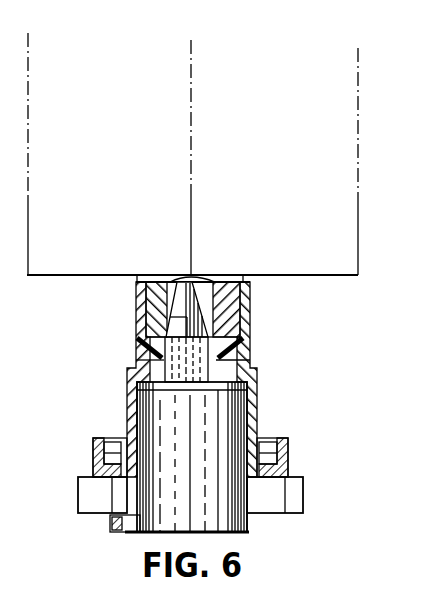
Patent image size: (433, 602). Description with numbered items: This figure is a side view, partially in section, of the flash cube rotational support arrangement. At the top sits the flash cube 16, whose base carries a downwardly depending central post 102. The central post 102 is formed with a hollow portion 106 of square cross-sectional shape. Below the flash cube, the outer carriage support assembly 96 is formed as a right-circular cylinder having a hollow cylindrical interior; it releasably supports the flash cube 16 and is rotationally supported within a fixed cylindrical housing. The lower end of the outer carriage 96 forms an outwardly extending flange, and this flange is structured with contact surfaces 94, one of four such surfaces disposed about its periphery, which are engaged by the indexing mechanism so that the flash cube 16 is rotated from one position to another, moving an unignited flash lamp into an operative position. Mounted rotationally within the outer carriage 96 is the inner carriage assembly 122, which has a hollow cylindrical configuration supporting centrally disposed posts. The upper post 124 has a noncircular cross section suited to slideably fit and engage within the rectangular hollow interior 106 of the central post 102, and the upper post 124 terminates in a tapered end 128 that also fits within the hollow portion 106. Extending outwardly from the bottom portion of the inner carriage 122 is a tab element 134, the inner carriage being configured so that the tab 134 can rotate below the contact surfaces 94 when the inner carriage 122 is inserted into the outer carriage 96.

The flash cube 16 is at (335, 222).
The contact surface 94 is at (93, 498).
The outer carriage support assembly 96 is at (252, 403).
The central post 102 is at (135, 312).
The hollow portion 106 is at (250, 294).
The inner carriage assembly 122 is at (257, 525).
The upper post 124 is at (250, 337).
The tapered end 128 is at (252, 318).
The tab element 134 is at (123, 528).